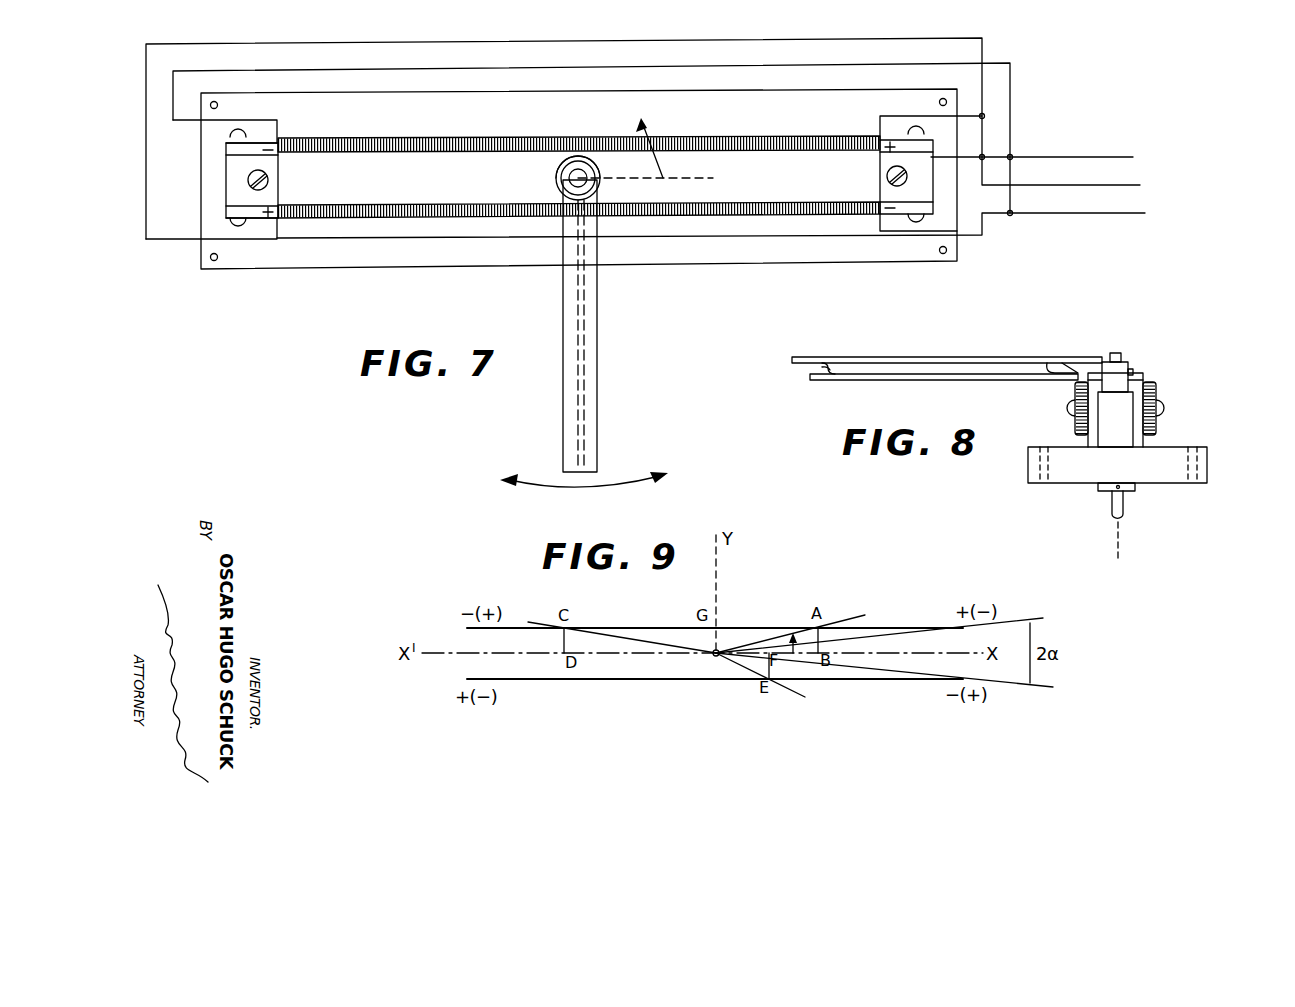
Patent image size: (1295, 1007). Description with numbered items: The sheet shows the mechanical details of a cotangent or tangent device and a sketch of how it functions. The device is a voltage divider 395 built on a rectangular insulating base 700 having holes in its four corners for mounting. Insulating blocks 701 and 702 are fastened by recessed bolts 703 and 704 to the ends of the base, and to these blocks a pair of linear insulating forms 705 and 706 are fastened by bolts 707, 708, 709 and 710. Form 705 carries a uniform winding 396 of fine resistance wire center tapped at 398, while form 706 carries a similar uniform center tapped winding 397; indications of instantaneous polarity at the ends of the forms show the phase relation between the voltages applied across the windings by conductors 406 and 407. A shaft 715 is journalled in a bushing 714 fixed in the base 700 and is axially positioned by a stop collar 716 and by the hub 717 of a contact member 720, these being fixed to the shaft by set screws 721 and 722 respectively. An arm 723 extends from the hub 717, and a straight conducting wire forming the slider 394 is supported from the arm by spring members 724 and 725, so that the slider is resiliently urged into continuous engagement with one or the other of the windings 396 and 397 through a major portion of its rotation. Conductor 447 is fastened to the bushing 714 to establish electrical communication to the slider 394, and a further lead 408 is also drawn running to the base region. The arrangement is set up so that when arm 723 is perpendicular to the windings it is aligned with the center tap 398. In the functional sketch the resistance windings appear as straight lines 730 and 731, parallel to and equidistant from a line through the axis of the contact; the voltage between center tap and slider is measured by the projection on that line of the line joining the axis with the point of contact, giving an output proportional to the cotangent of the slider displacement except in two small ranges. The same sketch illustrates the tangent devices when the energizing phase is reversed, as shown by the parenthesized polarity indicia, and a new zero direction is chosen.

In FIG. 7, the slider 394 is at (584, 342).
In FIG. 8, the slider 394 is at (862, 381).
In FIG. 7, the voltage divider 395 is at (404, 284).
In FIG. 7, the uniform winding 396 is at (421, 135).
In FIG. 8, the uniform winding 396 is at (1156, 386).
In FIG. 7, the uniform center tapped winding 397 is at (340, 213).
In FIG. 8, the uniform center tapped winding 397 is at (1075, 393).
In FIG. 7, the center tap 398 is at (572, 143).
In FIG. 7, the conductor 406 is at (280, 215).
In FIG. 7, the conductor 407 is at (280, 138).
In FIG. 7, the base plate 408 is at (586, 138).
In FIG. 8, the base plate 408 is at (1075, 442).
In FIG. 7, the conductor 447 is at (552, 172).
In FIG. 7, the rectangular insulating base 700 is at (443, 268).
In FIG. 7, the insulating block 701 is at (232, 182).
In FIG. 8, the insulating block 701 is at (1142, 437).
In FIG. 7, the insulating block 702 is at (928, 187).
In FIG. 7, the recessed bolt 703 is at (270, 180).
In FIG. 7, the recessed bolt 704 is at (886, 176).
In FIG. 7, the linear insulating form 705 is at (228, 150).
In FIG. 8, the linear insulating form 705 is at (1162, 405).
In FIG. 7, the linear insulating form 706 is at (228, 208).
In FIG. 8, the linear insulating form 706 is at (1073, 420).
In FIG. 7, the bolt 707 is at (230, 137).
In FIG. 7, the bolt 708 is at (232, 224).
In FIG. 7, the bolt 709 is at (914, 128).
In FIG. 7, the bolt 710 is at (914, 225).
In FIG. 8, the bushing 714 is at (1110, 440).
In FIG. 7, the shaft 715 is at (590, 182).
In FIG. 8, the shaft 715 is at (1116, 352).
In FIG. 8, the stop collar 716 is at (1135, 487).
In FIG. 8, the hub 717 is at (1124, 364).
In FIG. 7, the contact member 720 is at (584, 321).
In FIG. 8, the contact member 720 is at (926, 355).
In FIG. 8, the set screw 721 is at (1124, 499).
In FIG. 8, the set screw 722 is at (1134, 371).
In FIG. 7, the arm 723 is at (597, 408).
In FIG. 8, the arm 723 is at (968, 356).
In FIG. 8, the spring member 724 is at (822, 366).
In FIG. 8, the spring member 725 is at (1050, 371).
In FIG. 9, the straight line 730 is at (470, 628).
In FIG. 9, the straight line 731 is at (544, 679).